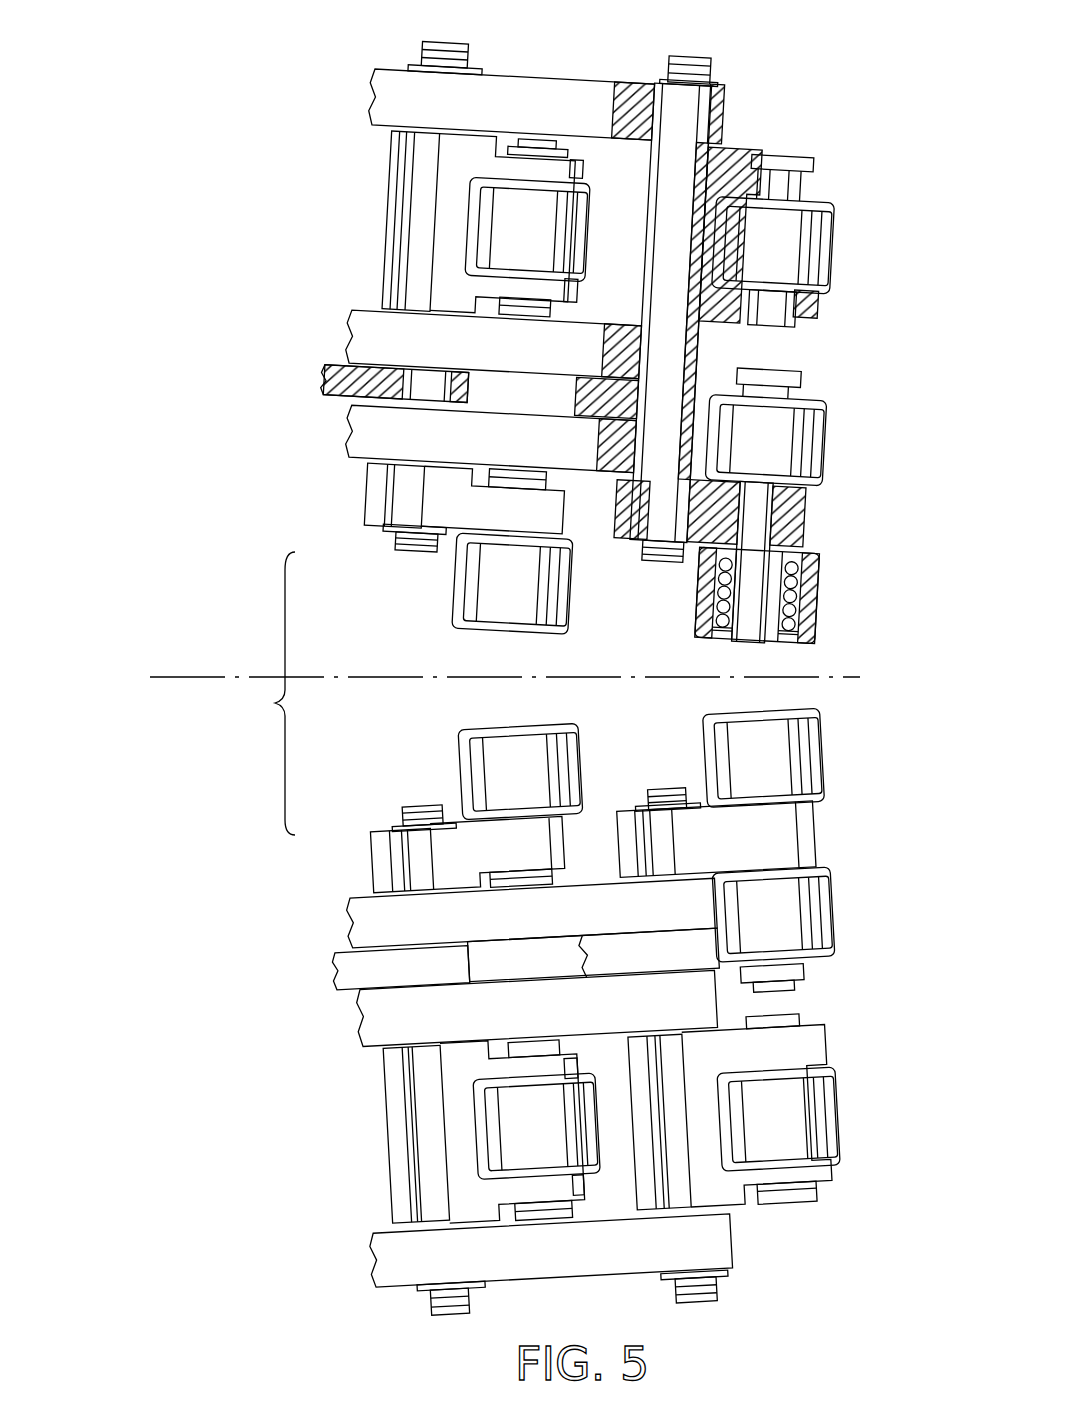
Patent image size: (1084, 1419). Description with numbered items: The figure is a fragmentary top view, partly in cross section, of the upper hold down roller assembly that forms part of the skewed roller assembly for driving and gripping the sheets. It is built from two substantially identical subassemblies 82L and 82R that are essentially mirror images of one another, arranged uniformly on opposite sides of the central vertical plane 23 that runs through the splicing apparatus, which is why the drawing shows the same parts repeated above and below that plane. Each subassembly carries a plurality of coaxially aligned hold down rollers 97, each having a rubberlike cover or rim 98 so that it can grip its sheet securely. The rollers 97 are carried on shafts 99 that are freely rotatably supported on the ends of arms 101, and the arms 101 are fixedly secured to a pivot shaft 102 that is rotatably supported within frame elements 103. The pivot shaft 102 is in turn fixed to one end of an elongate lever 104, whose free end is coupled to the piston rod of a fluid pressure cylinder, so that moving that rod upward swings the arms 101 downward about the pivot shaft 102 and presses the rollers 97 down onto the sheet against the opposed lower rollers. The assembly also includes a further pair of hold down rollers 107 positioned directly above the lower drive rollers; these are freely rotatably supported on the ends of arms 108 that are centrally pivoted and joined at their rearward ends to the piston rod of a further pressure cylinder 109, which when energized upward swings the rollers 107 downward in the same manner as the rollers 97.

The central vertical plane 23 is at (418, 677).
The left hold down roller subassembly 82L is at (767, 92).
The right hold down roller subassembly 82R is at (772, 1223).
The hold down roller 97 is at (815, 258).
The shaft 98 is at (808, 585).
The roller shaft 99 is at (785, 300).
The arm 101 is at (738, 160).
The pivot shaft 102 is at (677, 118).
The frame element 103 is at (390, 103).
The elongate lever 104 is at (600, 388).
The hold down roller 107 is at (575, 210).
The arm 108 is at (435, 220).
The pressure cylinder 109 is at (330, 375).